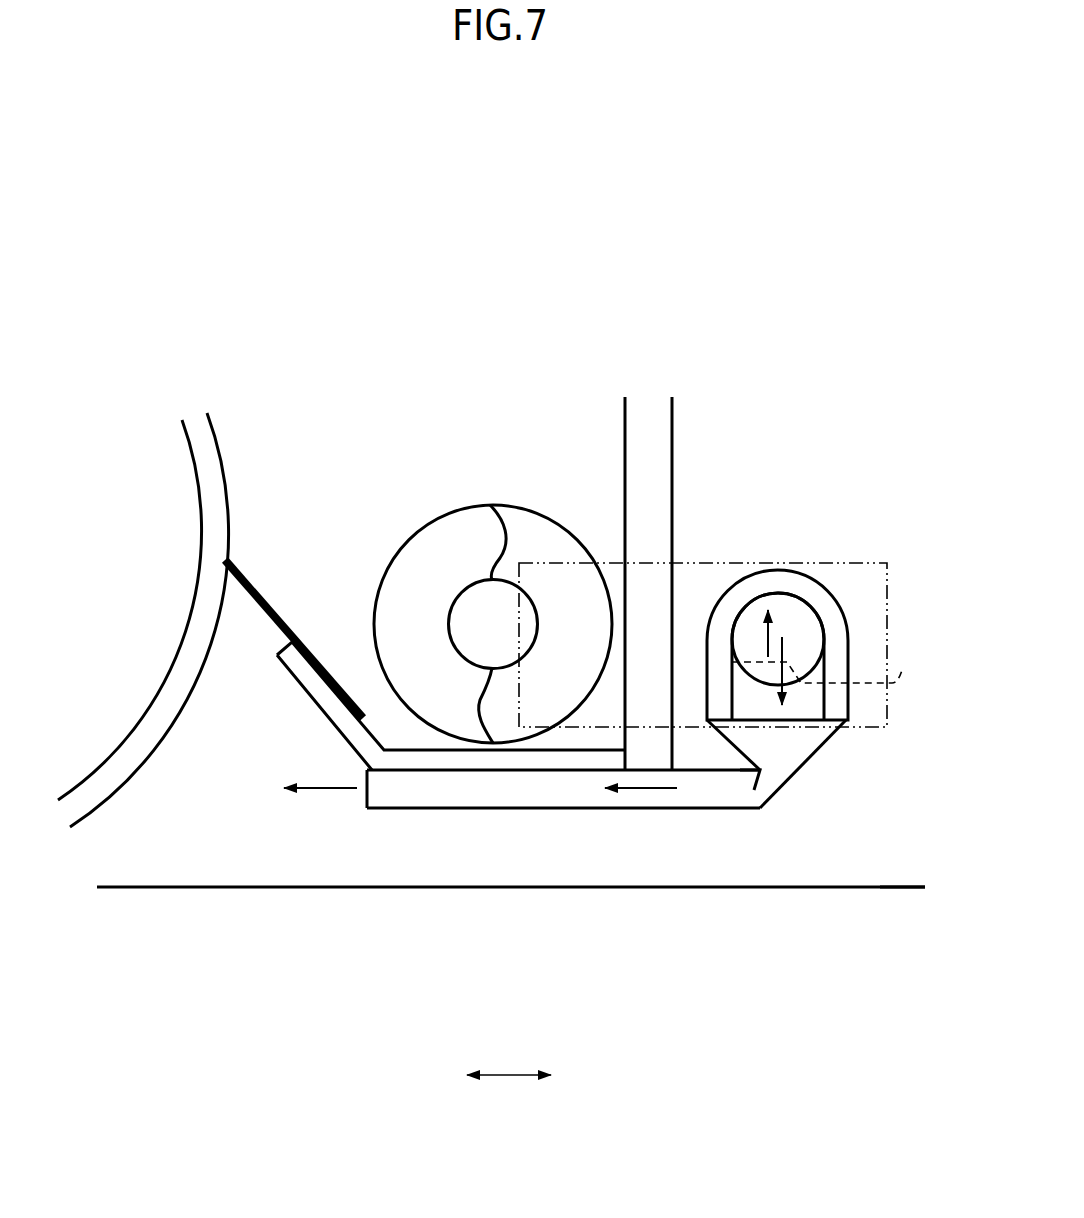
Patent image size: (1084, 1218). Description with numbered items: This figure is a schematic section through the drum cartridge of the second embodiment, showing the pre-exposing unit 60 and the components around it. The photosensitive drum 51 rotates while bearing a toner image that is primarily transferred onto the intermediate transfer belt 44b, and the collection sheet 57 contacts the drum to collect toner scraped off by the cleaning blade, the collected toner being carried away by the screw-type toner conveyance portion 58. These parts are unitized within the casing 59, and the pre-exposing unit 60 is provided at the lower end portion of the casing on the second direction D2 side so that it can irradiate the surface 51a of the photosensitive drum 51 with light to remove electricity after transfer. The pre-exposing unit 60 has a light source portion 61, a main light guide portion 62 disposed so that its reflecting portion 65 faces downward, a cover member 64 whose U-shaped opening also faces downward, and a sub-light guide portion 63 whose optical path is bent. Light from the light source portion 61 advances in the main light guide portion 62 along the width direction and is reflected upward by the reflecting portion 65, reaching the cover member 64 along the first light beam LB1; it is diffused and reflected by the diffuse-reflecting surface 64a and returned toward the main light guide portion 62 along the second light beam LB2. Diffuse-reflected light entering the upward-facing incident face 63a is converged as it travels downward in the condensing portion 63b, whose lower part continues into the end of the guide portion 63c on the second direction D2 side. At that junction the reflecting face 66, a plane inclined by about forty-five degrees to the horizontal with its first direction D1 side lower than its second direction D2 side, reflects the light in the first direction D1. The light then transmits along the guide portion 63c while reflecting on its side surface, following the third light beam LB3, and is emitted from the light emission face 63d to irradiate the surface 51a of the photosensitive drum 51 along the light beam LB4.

The photosensitive drum 51 is at (190, 596).
The surface of the photosensitive drum 51a is at (223, 507).
The collection sheet 57 is at (253, 598).
The toner conveyance portion 58 is at (527, 520).
The casing 59 is at (668, 432).
The pre-exposing unit 60 is at (734, 917).
The light source portion 61 is at (868, 562).
The main light guide portion 62 is at (817, 633).
The sub-light guide portion 63 is at (592, 790).
The incident face 63a is at (813, 715).
The condensing portion 63b is at (795, 757).
The guide portion 63c is at (467, 809).
The light emission face 63d is at (362, 802).
The cover member 64 is at (777, 611).
The diffuse-reflecting surface 64a is at (807, 610).
The reflecting portion 65 is at (893, 667).
The reflecting face 66 is at (773, 787).
The intermediate transfer belt 44b is at (511, 923).
The first light beam LB1 is at (733, 633).
The second light beam LB2 is at (785, 690).
The third light beam LB3 is at (658, 790).
The light beam LB4 is at (333, 788).
The first direction D1 is at (468, 1075).
The second direction D2 is at (555, 1075).